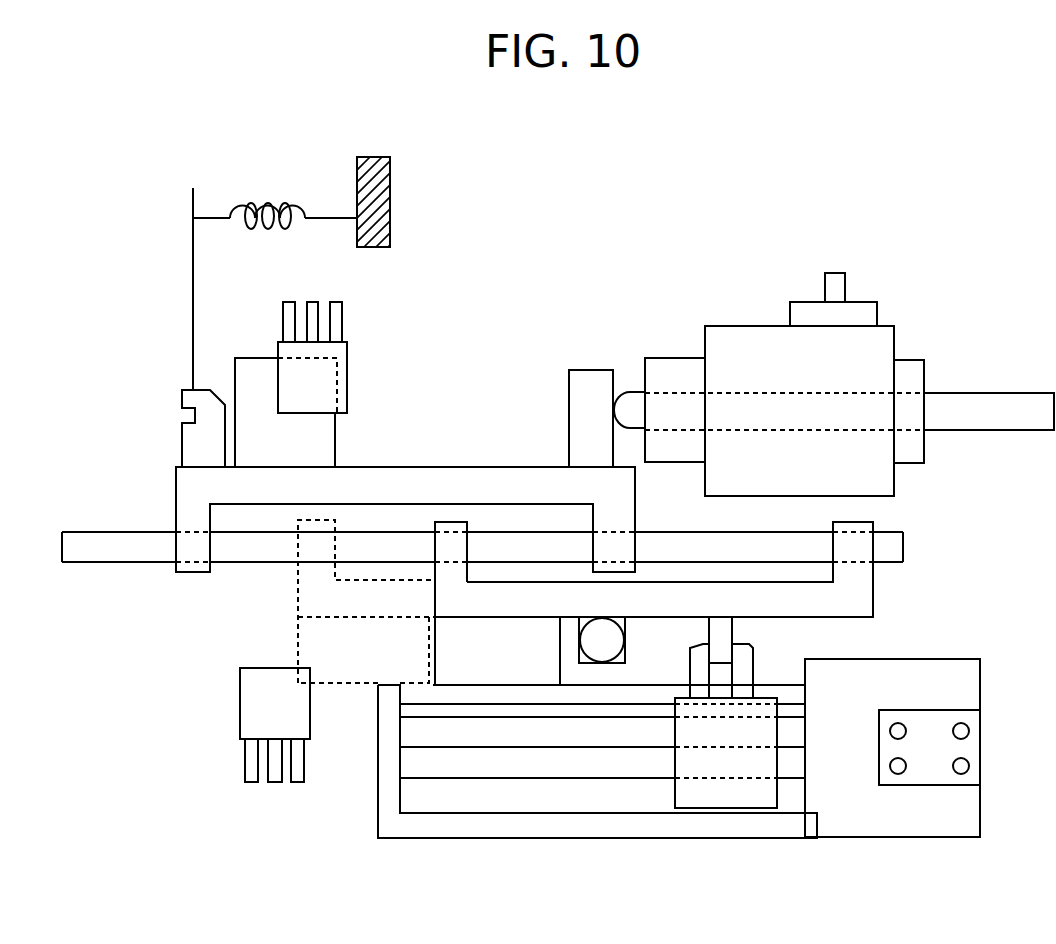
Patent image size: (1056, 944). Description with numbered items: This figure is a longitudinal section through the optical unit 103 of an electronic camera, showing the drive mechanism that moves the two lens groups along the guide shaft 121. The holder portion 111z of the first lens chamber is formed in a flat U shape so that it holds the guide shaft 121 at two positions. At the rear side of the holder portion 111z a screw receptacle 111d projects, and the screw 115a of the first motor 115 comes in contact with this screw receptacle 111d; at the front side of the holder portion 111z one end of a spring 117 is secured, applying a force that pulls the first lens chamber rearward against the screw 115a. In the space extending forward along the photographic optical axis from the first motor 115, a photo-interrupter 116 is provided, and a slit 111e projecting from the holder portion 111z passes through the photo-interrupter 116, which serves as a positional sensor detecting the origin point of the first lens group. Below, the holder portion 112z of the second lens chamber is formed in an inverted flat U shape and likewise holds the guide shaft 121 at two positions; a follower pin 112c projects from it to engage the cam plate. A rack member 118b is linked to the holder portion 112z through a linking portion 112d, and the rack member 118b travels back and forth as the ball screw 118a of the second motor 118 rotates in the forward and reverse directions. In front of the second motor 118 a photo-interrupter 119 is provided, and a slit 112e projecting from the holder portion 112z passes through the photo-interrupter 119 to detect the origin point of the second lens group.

The optical unit 103 is at (378, 160).
The screw receptacle 111d is at (587, 383).
The slit 111e is at (312, 440).
The holder portion 111z is at (528, 485).
The follower pin 112c is at (600, 645).
The linking portion 112d is at (727, 630).
The slit 112e is at (497, 672).
The holder portion 112z is at (858, 587).
The first motor 115 is at (862, 340).
The screw 115a is at (1003, 400).
The photo-interrupter 116 is at (300, 382).
The spring 117 is at (275, 190).
The second motor 118 is at (900, 830).
The ball screw 118a is at (425, 757).
The rack member 118b is at (757, 790).
The photo-interrupter 119 is at (237, 712).
The guide shaft 121 is at (85, 535).